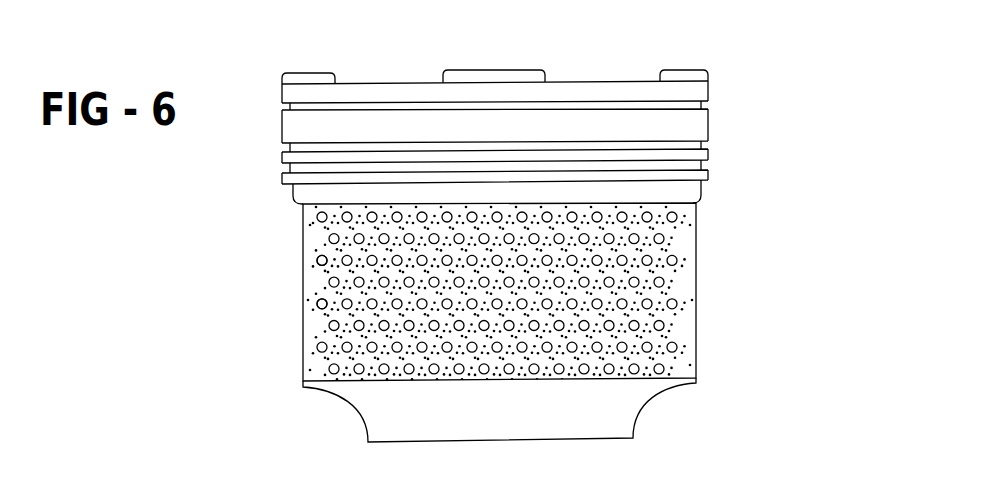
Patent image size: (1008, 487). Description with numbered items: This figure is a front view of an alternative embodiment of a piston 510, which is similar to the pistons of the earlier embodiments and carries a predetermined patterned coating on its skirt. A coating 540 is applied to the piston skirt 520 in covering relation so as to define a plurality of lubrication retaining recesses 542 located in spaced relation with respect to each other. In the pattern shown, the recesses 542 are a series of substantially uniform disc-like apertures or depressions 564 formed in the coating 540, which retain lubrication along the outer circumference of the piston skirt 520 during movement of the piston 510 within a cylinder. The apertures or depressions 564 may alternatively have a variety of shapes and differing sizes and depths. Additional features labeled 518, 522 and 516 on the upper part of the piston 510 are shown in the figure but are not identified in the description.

The piston 510 is at (517, 235).
The piston skirt 516 is at (770, 196).
The piston crown / ring land 518 is at (752, 83).
The piston skirt 520 is at (506, 293).
The piston ring grooves 522 is at (703, 166).
The coating 540 is at (692, 293).
The lubrication retaining recesses 542 is at (676, 343).
The disc-like apertures or depressions 564 is at (320, 259).